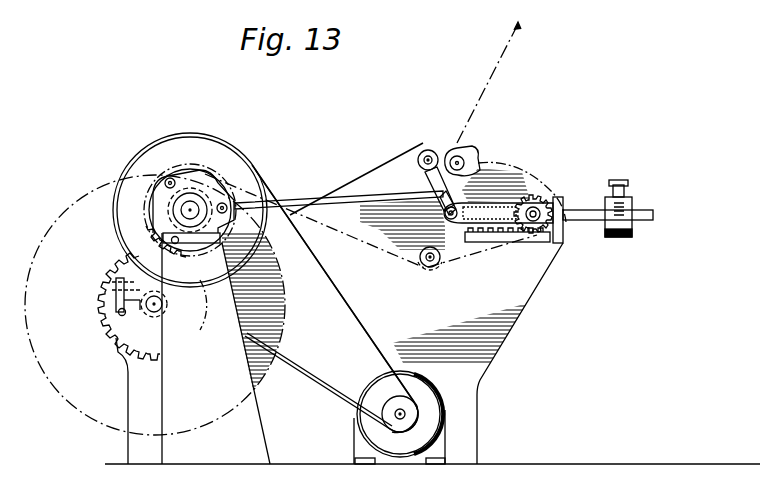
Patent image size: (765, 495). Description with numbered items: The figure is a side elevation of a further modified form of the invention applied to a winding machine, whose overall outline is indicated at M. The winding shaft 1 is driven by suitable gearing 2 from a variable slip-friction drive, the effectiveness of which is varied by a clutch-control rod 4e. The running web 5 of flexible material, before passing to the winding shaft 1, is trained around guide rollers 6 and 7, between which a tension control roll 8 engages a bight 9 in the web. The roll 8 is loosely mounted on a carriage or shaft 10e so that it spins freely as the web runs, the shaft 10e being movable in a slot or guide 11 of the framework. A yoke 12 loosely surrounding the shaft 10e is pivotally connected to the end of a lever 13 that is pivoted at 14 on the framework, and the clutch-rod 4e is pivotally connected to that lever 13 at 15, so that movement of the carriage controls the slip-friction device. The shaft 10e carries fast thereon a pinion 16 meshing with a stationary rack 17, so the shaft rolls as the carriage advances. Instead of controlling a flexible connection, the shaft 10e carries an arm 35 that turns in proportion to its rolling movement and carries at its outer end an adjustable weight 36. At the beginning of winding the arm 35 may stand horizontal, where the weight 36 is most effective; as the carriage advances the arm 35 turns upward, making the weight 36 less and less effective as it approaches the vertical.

The winding shaft 1 is at (232, 258).
The gearing 2 is at (108, 276).
The machine outline circle M is at (67, 390).
The clutch-control rod 4e is at (298, 203).
The running web 5 is at (516, 33).
The guide roller 6 is at (461, 154).
The guide roller 7 is at (428, 267).
The tension control roll 8 is at (550, 195).
The bight 9 is at (505, 191).
The carriage shaft 10e is at (561, 209).
The slot or guide 11 is at (480, 198).
The yoke 12 is at (467, 226).
The lever 13 is at (428, 176).
The pivot 14 is at (428, 149).
The pivotal connection 15 is at (437, 200).
The pinion 16 is at (539, 191).
The stationary rack 17 is at (546, 230).
The arm 35 is at (597, 222).
The adjustable weight 36 is at (633, 201).